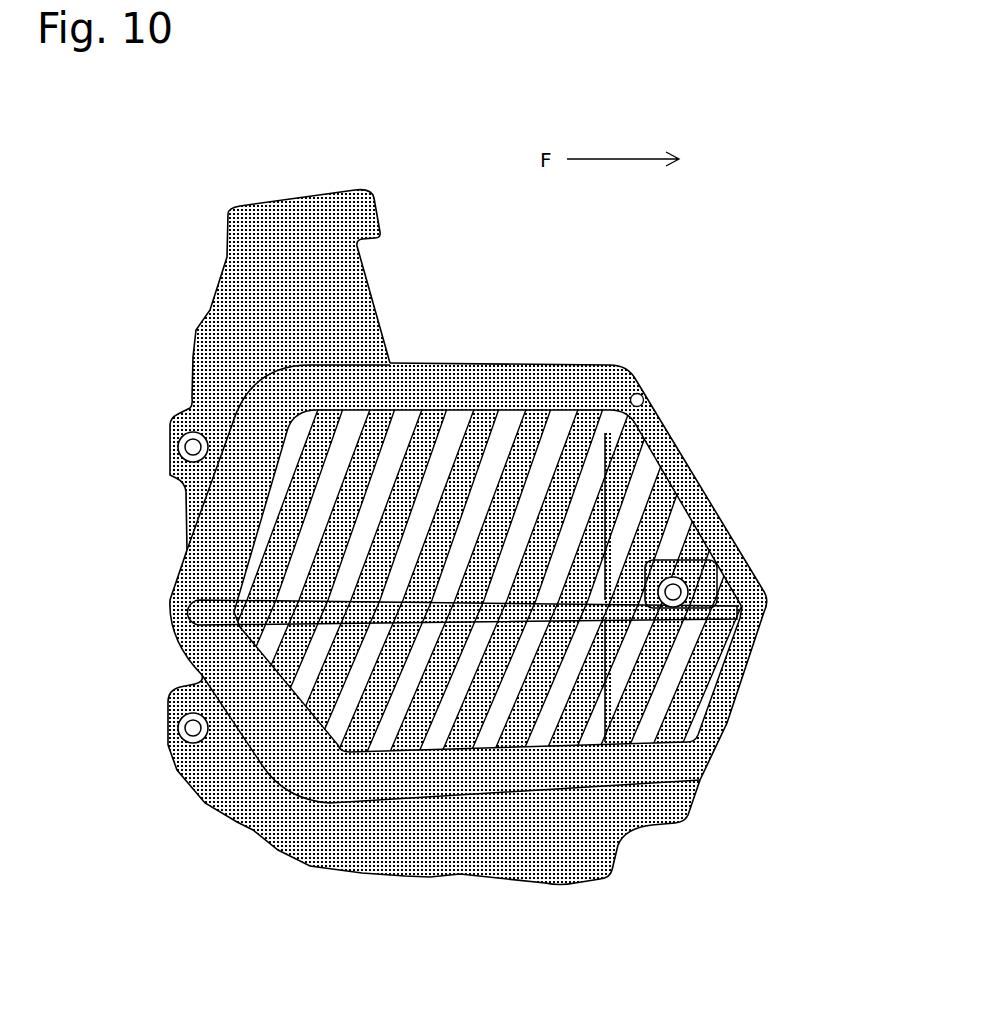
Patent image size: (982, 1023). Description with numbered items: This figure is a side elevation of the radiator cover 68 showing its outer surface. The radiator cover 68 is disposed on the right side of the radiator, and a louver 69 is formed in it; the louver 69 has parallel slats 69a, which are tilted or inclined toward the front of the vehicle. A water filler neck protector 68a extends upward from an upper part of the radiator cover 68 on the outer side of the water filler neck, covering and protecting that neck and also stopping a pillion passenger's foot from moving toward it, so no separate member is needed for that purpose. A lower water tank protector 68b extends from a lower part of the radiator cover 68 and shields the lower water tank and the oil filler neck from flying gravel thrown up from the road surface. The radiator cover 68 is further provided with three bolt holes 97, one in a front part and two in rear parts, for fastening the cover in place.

The radiator cover 68 is at (722, 360).
The water filler neck protector 68a is at (247, 270).
The lower water tank protector 68b is at (358, 847).
The louver 69 is at (475, 751).
The parallel slats 69a is at (530, 712).
The bolt holes 97 is at (190, 447).